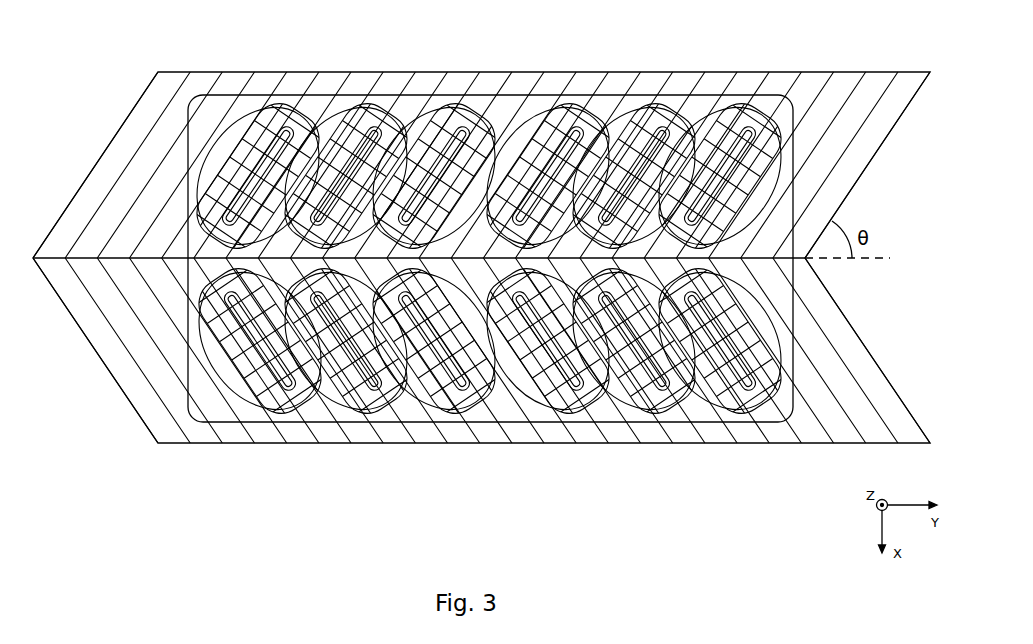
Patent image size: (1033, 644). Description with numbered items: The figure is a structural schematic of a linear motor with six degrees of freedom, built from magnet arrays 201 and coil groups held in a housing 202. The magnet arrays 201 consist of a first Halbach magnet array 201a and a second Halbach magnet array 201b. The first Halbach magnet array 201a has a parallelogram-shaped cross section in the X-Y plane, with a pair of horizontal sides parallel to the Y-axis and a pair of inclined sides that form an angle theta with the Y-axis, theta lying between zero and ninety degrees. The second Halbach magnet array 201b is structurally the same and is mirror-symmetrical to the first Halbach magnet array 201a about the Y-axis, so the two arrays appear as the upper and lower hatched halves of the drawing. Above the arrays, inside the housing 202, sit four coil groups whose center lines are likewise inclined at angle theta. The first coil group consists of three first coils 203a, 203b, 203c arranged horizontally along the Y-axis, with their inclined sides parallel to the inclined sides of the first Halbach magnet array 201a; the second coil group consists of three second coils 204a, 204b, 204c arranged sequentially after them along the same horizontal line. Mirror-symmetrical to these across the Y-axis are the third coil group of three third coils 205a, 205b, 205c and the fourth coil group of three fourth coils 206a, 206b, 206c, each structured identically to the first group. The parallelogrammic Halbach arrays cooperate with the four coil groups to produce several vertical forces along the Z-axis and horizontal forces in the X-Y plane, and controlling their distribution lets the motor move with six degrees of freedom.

The magnet arrays 201 is at (68, 207).
The first Halbach magnet array 201a is at (107, 182).
The second Halbach magnet array 201b is at (110, 337).
The housing 202 is at (224, 118).
The first coil 203a is at (264, 150).
The first coil 203b is at (352, 150).
The first coil 203c is at (440, 150).
The second coil 204a is at (556, 150).
The second coil 204b is at (644, 150).
The second coil 204c is at (730, 150).
The third coil 205a is at (290, 402).
The third coil 205b is at (376, 402).
The third coil 205c is at (466, 402).
The fourth coil 206a is at (580, 402).
The fourth coil 206b is at (666, 402).
The fourth coil 206c is at (752, 402).